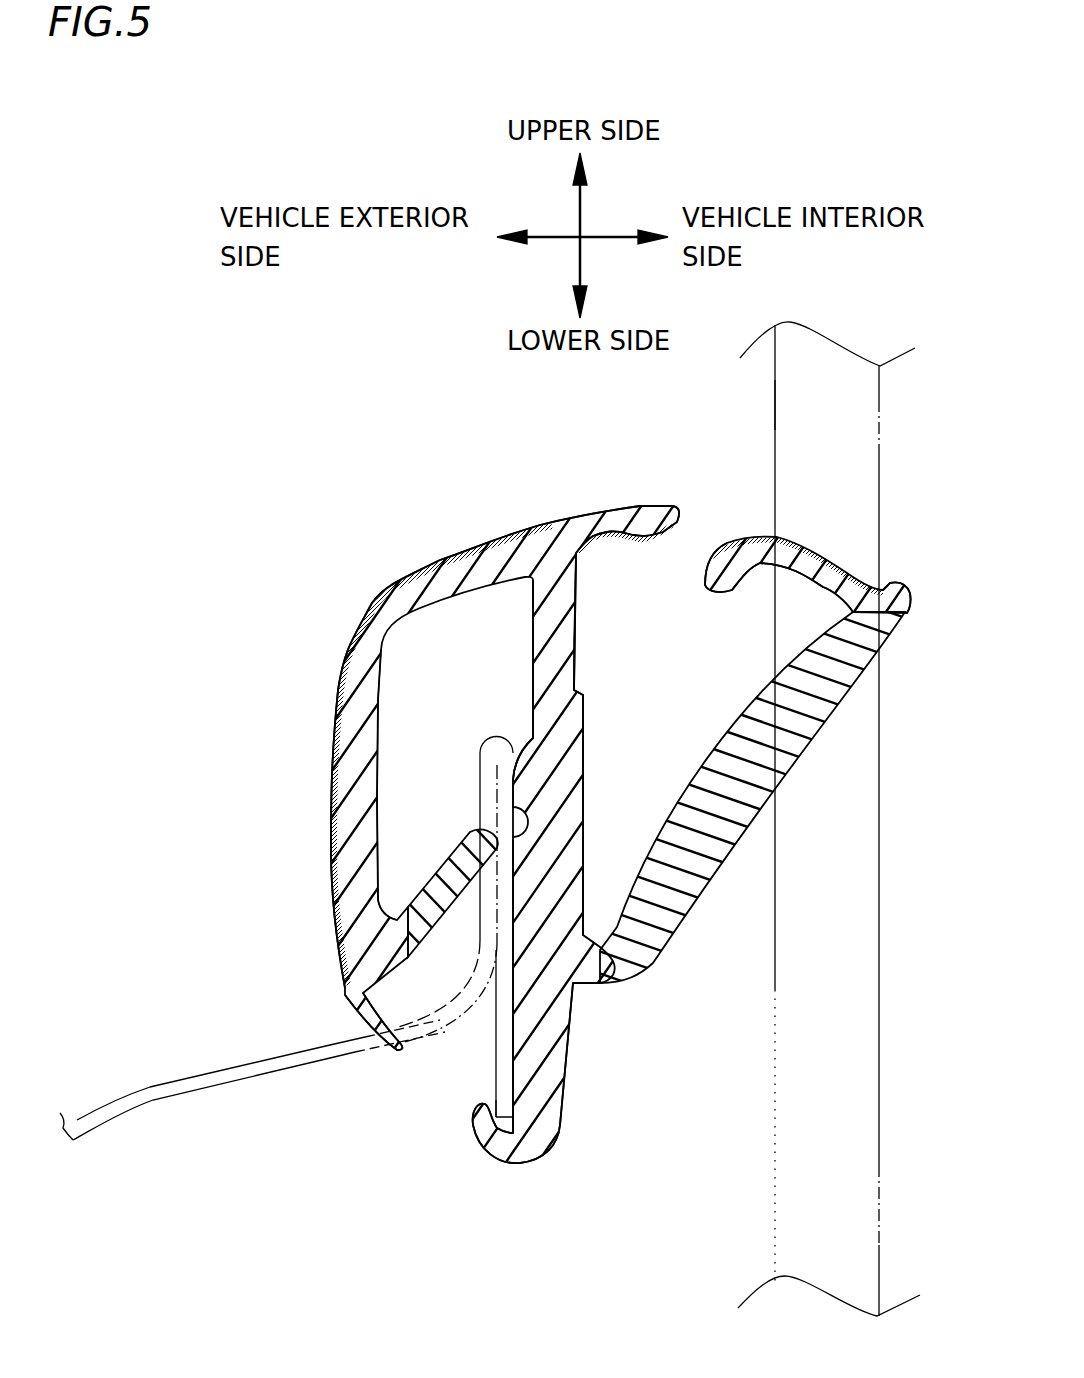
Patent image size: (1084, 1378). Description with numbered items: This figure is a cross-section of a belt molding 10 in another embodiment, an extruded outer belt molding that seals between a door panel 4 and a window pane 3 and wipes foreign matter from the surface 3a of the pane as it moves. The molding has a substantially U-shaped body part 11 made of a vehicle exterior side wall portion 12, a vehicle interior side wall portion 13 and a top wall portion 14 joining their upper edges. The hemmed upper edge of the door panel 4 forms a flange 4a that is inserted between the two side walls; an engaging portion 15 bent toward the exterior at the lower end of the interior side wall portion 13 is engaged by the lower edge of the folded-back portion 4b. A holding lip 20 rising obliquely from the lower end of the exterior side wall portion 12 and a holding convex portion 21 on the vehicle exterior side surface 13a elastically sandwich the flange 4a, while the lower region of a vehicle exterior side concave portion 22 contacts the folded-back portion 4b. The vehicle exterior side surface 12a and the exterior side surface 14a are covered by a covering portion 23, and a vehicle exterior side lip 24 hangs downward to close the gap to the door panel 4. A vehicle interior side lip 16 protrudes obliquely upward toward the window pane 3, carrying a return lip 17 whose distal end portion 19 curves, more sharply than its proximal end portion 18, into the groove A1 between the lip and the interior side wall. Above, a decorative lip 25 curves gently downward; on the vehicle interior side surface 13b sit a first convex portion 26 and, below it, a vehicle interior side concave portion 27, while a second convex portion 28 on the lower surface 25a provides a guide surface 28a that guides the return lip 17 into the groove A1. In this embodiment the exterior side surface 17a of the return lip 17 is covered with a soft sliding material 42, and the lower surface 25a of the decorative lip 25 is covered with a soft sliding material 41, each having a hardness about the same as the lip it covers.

The window pane 3 is at (841, 819).
The surface of the window pane 3a is at (736, 392).
The door panel 4 is at (278, 1040).
The flange 4a is at (478, 905).
The folded-back portion 4b is at (450, 1117).
The belt molding 10 is at (542, 795).
The body part 11 is at (340, 776).
The vehicle exterior side wall portion 12 is at (317, 795).
The vehicle exterior side surface 12a is at (294, 795).
The vehicle interior side wall portion 13 is at (577, 843).
The vehicle exterior side surface 13a is at (438, 991).
The vehicle interior side surface 13b is at (631, 760).
The top wall portion 14 is at (529, 539).
The exterior side surface 14a is at (463, 527).
The engaging portion 15 is at (508, 1167).
The vehicle interior side lip 16 is at (757, 796).
The return lip 17 is at (814, 531).
The exterior side surface 17a is at (797, 531).
The proximal end portion 18 is at (917, 575).
The distal end portion 19 is at (736, 552).
The holding lip 20 is at (450, 888).
The holding convex portion 21 is at (511, 725).
The vehicle exterior side concave portion 22 is at (592, 903).
The covering portion 23 is at (398, 554).
The vehicle exterior side lip 24 is at (339, 1018).
The decorative lip 25 is at (572, 515).
The lower surface 25a is at (617, 579).
The first convex portion 26 is at (611, 615).
The vehicle interior side concave portion 27 is at (609, 680).
The second convex portion 28 is at (663, 570).
The guide surface 28a is at (658, 513).
The soft sliding material 41 is at (638, 481).
The soft sliding material 42 is at (806, 600).
The groove A1 is at (621, 810).